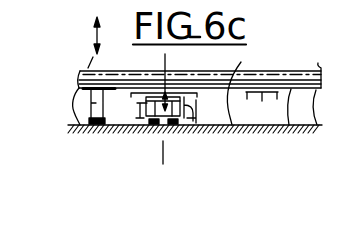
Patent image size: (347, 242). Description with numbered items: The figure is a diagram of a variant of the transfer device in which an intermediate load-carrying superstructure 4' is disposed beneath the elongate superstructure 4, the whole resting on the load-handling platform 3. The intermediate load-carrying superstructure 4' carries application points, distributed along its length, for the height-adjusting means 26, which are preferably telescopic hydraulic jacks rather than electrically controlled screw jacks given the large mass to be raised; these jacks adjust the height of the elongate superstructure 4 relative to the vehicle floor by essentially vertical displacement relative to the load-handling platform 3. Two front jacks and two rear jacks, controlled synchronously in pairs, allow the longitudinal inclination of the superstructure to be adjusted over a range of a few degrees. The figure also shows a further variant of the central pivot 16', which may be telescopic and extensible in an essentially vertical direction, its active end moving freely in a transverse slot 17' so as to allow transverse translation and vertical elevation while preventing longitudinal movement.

The height-adjusting means 26 is at (92, 109).
The central pivot 16' is at (157, 136).
The transverse slot 17' is at (206, 138).
The elongate superstructure 4 is at (233, 120).
The load-handling platform 3 is at (254, 121).
The intermediate load-carrying superstructure 4' is at (299, 132).